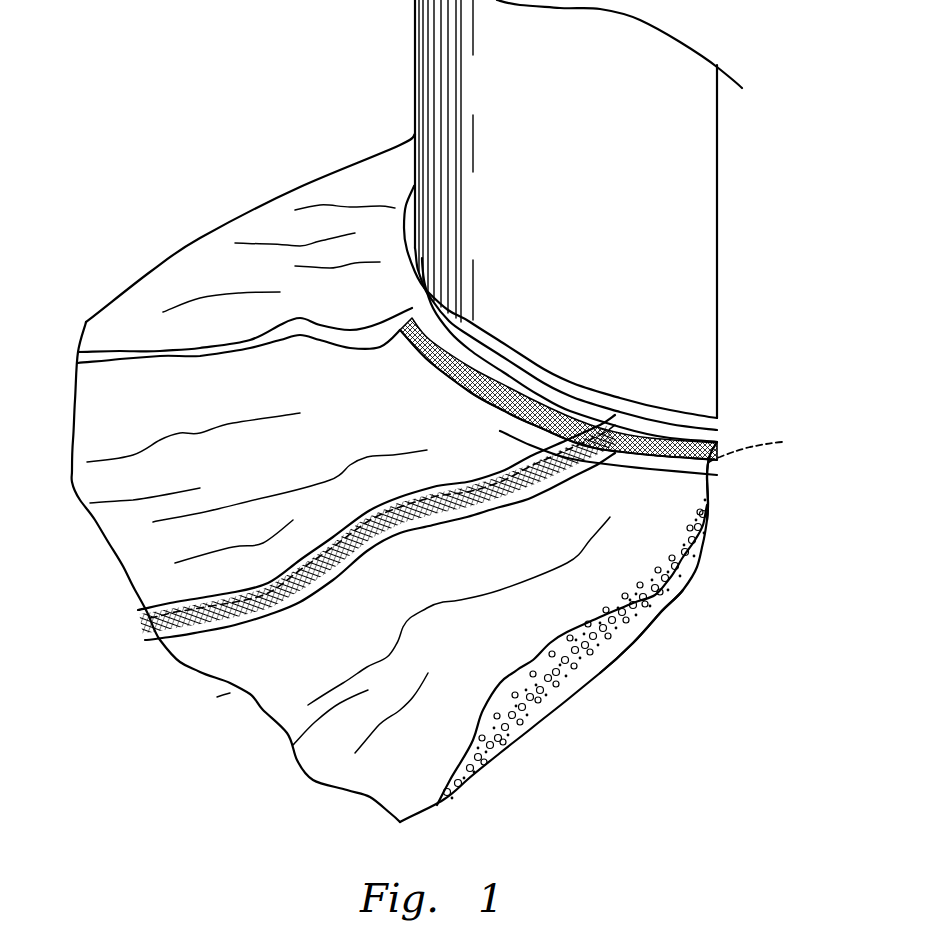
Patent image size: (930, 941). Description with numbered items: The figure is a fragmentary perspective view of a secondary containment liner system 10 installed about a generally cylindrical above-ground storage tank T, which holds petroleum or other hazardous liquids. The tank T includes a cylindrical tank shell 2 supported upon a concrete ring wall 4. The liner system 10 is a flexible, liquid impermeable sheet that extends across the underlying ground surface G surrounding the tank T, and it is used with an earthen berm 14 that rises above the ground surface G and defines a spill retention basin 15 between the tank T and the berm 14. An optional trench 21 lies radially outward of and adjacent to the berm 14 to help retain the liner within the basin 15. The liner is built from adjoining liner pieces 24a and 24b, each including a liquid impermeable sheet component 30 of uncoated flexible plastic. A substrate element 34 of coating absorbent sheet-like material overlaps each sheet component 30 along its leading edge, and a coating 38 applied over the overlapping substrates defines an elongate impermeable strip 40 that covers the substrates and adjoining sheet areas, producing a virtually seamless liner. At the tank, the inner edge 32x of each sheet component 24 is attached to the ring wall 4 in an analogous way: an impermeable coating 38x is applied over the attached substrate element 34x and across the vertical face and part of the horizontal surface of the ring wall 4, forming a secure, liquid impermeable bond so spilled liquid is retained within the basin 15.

The storage tank T is at (720, 180).
The tank shell 2 is at (717, 317).
The concrete ring wall 4 is at (503, 347).
The inner edge of liner 32x is at (547, 420).
The impermeable coating 38x is at (637, 415).
The substrate element 34x is at (770, 445).
The secondary containment liner system 10 is at (712, 503).
The spill retention basin 15 is at (372, 243).
The impermeable strip 40 is at (78, 354).
The coating 38 is at (120, 360).
The substrate element 34 is at (530, 477).
The trench 21 is at (135, 425).
The liner piece 24a is at (147, 588).
The liner piece 24b is at (240, 692).
The liner component 24 is at (163, 773).
The sheet component 30 is at (403, 772).
The earthen berm 14 is at (523, 668).
The underlying ground surface G is at (658, 618).